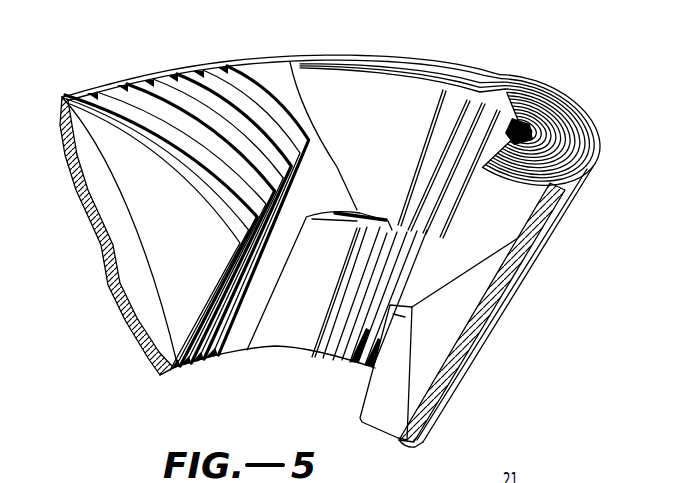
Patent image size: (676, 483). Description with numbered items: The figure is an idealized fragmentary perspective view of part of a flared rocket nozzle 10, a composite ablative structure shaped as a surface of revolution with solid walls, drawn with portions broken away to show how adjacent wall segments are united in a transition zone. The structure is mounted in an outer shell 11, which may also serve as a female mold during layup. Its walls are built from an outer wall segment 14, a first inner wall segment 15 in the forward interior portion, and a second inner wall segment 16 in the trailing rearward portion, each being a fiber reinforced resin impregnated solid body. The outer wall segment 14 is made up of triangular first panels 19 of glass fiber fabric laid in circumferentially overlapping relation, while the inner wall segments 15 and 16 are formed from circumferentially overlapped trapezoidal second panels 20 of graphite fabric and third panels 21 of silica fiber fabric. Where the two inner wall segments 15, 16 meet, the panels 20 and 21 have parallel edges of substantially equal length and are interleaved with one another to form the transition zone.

The flared rocket nozzle 10 is at (253, 157).
The outer shell 11 is at (598, 152).
The outer wall segment 14 is at (98, 236).
The first inner wall segment 15 is at (290, 346).
The second inner wall segment 16 is at (328, 74).
The first panels 19 is at (115, 230).
The second panels 20 is at (305, 337).
The third panels 21 is at (347, 78).